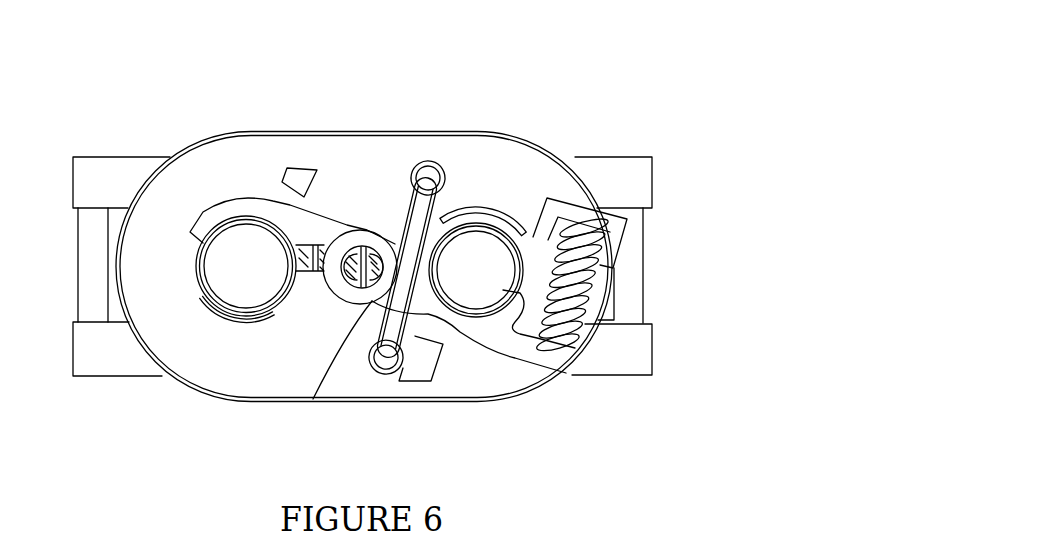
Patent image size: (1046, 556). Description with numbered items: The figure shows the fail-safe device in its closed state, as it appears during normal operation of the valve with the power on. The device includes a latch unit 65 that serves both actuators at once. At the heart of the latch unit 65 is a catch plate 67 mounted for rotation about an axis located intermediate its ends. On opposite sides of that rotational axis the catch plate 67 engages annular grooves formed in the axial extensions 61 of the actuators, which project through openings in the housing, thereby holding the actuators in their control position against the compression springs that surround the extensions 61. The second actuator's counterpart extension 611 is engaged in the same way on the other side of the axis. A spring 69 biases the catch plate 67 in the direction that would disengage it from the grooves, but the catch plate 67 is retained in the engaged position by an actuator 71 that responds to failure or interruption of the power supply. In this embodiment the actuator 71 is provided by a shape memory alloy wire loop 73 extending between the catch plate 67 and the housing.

The latch unit 65 is at (381, 170).
The axial extension 61 is at (240, 283).
The second gear 611 is at (474, 253).
The catch plate 67 is at (247, 198).
The spring 69 is at (605, 293).
The actuator 71 is at (362, 338).
The shape memory alloy (SMA) wire loop 73 is at (437, 325).